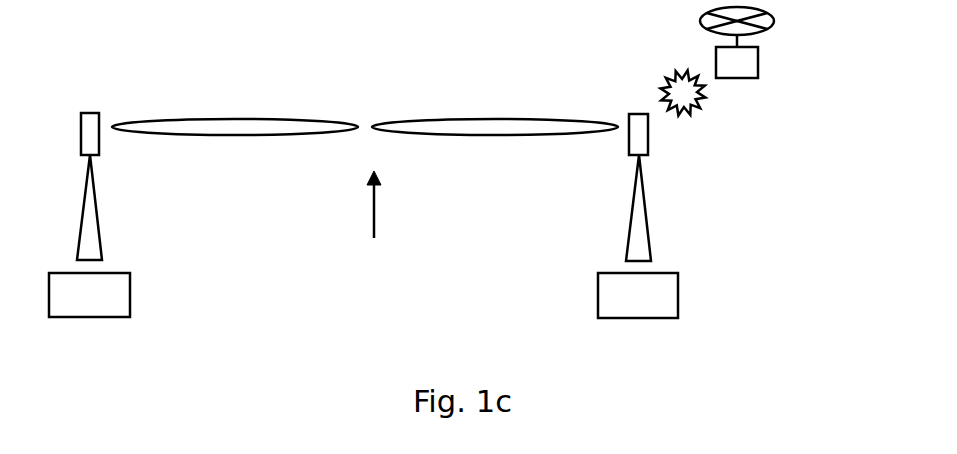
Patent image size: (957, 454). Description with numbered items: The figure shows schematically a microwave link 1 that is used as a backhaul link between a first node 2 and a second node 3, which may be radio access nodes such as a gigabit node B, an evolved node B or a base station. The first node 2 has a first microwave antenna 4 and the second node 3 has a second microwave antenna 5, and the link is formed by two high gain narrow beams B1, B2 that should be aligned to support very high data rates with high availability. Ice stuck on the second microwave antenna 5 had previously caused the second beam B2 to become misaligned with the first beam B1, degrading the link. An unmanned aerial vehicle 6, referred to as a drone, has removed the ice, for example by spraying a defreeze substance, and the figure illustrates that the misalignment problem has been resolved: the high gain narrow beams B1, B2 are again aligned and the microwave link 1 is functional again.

The microwave link 1 is at (374, 222).
The first node 2 is at (110, 303).
The second node 3 is at (657, 303).
The first microwave antenna 4 is at (100, 147).
The second microwave antenna 5 is at (629, 154).
The unmanned aerial vehicle 6 is at (748, 72).
The first high gain narrow beam B1 is at (277, 118).
The second high gain narrow beam B2 is at (508, 117).